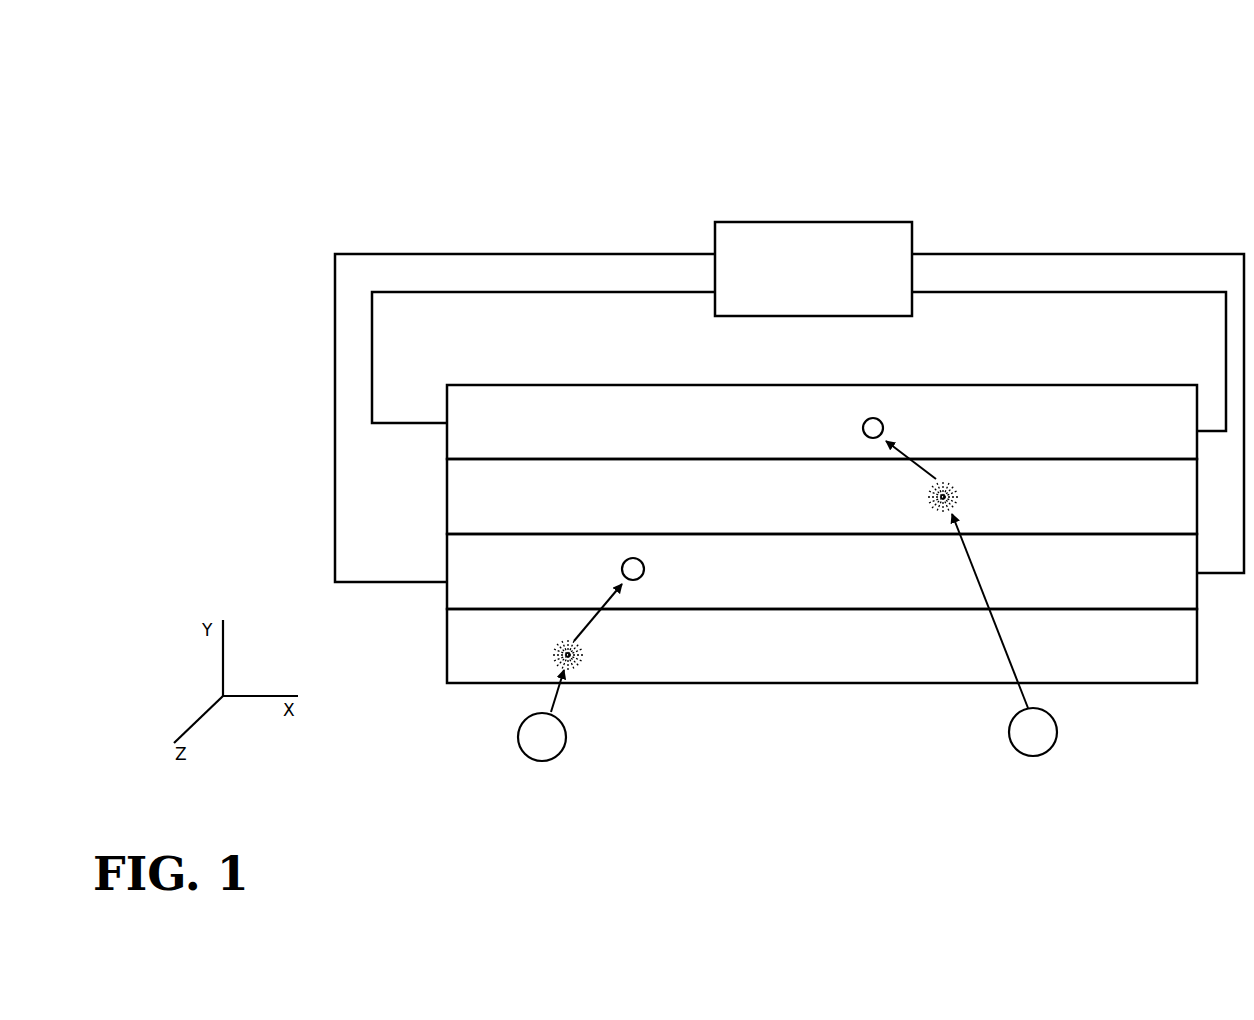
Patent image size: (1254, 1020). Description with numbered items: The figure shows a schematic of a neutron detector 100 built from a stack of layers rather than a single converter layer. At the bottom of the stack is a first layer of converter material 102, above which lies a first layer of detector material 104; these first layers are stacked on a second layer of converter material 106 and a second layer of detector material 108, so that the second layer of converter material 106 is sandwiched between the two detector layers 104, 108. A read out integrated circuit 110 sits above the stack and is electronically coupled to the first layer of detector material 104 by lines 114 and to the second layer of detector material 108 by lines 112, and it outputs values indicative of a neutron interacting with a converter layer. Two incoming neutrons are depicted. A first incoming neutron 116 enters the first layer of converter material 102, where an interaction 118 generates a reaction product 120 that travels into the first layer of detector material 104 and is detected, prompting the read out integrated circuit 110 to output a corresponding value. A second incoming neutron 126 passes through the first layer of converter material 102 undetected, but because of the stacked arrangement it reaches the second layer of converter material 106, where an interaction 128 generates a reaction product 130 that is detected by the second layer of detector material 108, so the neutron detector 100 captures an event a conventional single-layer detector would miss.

The neutron detector 100 is at (200, 117).
The first layer of converter material 102 is at (447, 662).
The first layer of detector material 104 is at (447, 570).
The second layer of converter material 106 is at (447, 500).
The second layer of detector material 108 is at (447, 408).
The read out integrated circuit 110 is at (790, 222).
The lines 112 is at (489, 300).
The lines 114 is at (428, 240).
The first incoming neutron 116 is at (583, 744).
The interaction 118 is at (552, 655).
The reaction product 120 is at (618, 550).
The second incoming neutron 126 is at (995, 736).
The interaction 128 is at (962, 500).
The reaction product 130 is at (878, 410).